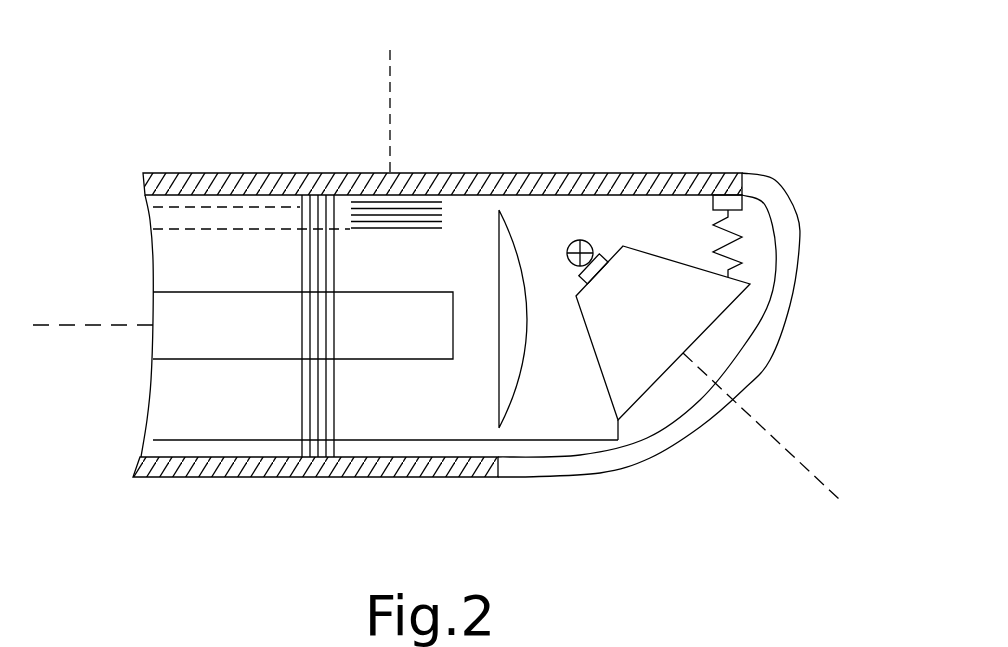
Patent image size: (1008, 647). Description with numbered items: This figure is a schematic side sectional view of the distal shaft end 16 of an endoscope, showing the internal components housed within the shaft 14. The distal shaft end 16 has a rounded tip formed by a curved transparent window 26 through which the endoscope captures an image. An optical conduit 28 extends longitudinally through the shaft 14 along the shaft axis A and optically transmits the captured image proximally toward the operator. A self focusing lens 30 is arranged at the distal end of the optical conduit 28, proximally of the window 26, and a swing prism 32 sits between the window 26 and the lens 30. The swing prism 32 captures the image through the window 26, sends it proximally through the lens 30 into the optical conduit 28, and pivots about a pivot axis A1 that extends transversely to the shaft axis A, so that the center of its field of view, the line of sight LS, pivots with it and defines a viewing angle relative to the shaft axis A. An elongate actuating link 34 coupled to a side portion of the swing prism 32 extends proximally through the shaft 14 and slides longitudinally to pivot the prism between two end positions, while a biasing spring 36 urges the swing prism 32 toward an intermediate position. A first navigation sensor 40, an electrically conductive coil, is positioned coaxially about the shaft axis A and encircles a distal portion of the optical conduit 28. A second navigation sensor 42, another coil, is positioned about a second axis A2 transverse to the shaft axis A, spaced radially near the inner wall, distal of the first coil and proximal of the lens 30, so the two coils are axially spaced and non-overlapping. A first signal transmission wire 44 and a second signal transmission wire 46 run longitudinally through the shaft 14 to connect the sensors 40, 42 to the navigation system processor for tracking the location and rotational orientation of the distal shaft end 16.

The shaft 14 is at (178, 173).
The distal shaft end 16 is at (319, 72).
The curved transparent window 26 is at (792, 307).
The optical conduit 28 is at (183, 358).
The self focusing lens 30 is at (497, 212).
The swing prism 32 is at (640, 250).
The actuating link 34 is at (405, 441).
The biasing spring 36 is at (722, 238).
The first navigation sensor 40 is at (302, 405).
The second navigation sensor 42 is at (387, 228).
The first signal transmission wire 44 is at (220, 207).
The second signal transmission wire 46 is at (188, 230).
The shaft axis A is at (88, 325).
The pivot axis A1 is at (575, 240).
The second axis A2 is at (392, 79).
The line of sight LS is at (788, 450).